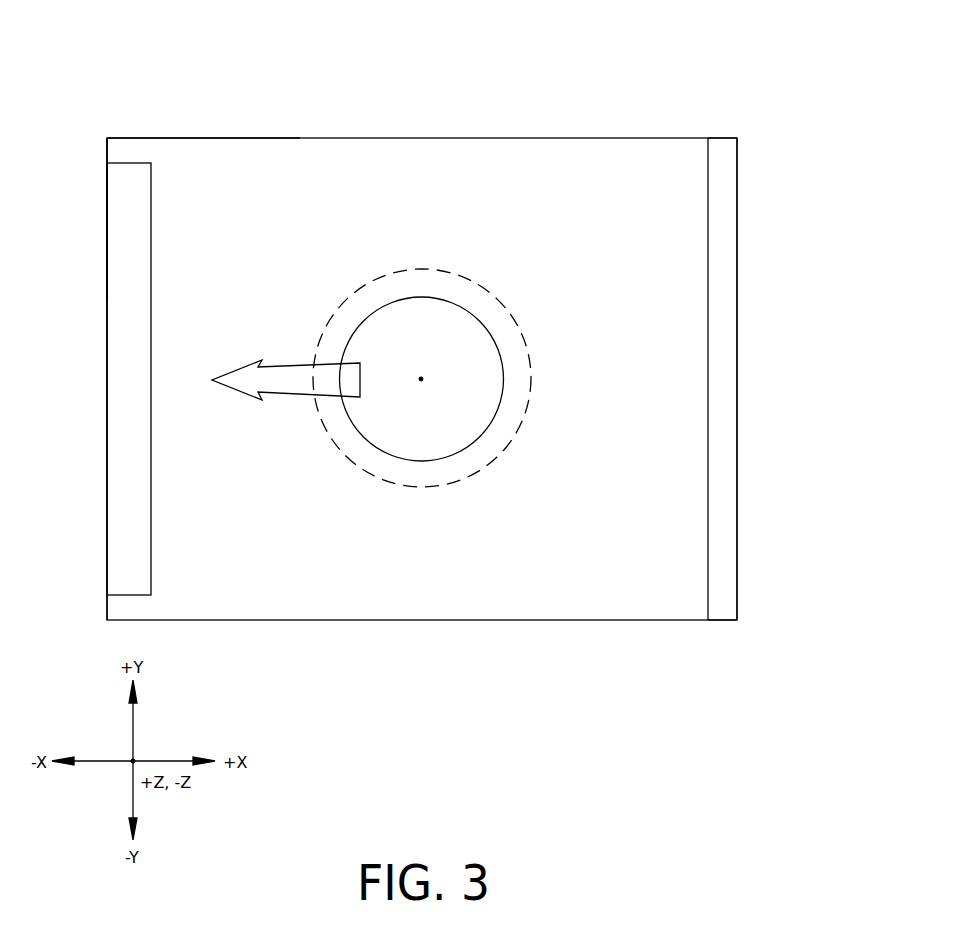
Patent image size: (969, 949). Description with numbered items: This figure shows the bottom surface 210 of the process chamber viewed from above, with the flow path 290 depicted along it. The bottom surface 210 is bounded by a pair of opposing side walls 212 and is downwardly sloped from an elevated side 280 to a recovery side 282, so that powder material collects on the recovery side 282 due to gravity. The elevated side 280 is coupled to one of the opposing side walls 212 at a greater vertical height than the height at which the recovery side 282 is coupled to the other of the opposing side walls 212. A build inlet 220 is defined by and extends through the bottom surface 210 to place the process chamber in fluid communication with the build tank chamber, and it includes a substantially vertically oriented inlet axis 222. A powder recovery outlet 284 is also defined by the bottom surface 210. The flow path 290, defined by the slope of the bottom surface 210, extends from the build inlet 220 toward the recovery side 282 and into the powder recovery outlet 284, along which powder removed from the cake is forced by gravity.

The bottom surface 210 is at (562, 148).
The opposing side walls 212 is at (107, 427).
The build inlet 220 is at (405, 332).
The inlet axis 222 is at (422, 382).
The elevated side 280 is at (687, 130).
The recovery side 282 is at (192, 128).
The powder recovery outlet 284 is at (151, 512).
The flow path 290 is at (288, 362).